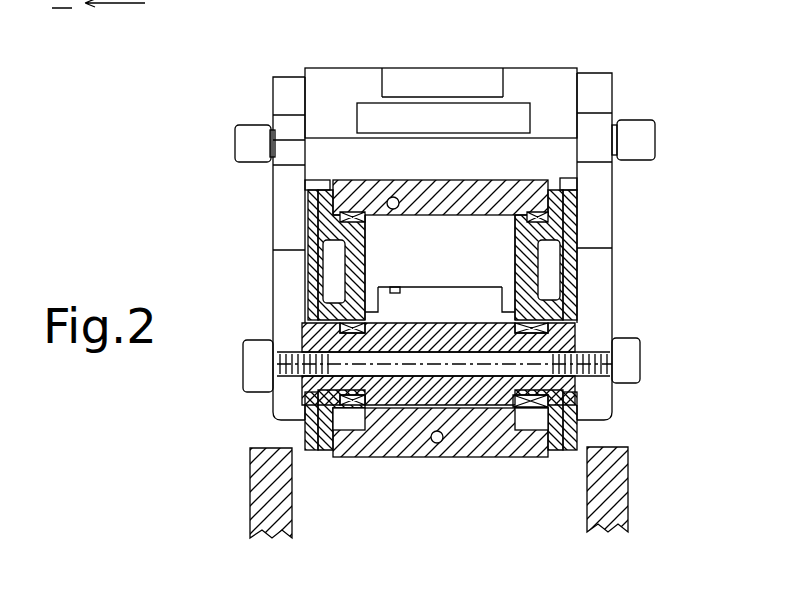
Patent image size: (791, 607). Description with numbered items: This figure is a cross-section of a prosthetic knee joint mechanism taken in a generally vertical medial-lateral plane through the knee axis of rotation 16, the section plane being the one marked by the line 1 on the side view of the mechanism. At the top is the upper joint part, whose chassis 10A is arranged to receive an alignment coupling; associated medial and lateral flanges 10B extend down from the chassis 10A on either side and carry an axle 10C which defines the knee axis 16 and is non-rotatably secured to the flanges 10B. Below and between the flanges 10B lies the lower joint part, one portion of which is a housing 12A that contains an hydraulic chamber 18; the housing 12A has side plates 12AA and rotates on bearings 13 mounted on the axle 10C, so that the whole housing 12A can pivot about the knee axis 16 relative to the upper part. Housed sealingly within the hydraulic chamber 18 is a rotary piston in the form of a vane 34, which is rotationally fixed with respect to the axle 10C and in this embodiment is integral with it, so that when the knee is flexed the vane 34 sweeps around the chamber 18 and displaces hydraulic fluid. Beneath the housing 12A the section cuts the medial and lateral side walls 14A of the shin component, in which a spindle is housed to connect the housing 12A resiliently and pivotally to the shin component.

The section line I-I 1 is at (443, 85).
The chassis 10A is at (557, 82).
The medial and lateral flanges 10B is at (597, 222).
The axle 10C is at (295, 335).
The housing 12A is at (450, 195).
The side plates 12AA is at (320, 226).
The bearings 13 is at (565, 323).
The medial and lateral side walls 14A is at (262, 505).
The knee axis 16 is at (623, 357).
The hydraulic chamber 18 is at (447, 273).
The vane 34 is at (470, 335).